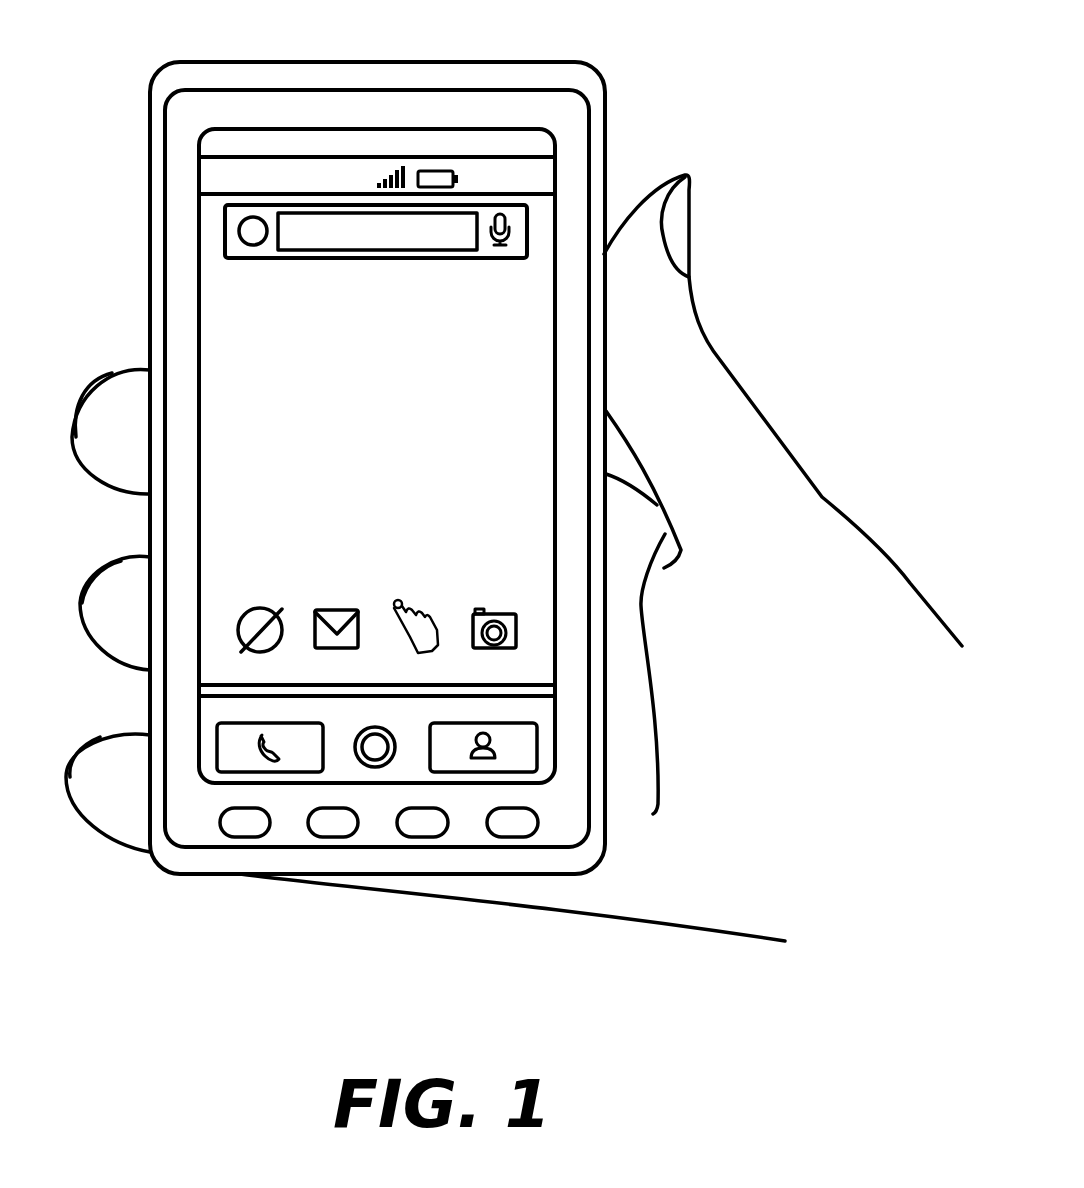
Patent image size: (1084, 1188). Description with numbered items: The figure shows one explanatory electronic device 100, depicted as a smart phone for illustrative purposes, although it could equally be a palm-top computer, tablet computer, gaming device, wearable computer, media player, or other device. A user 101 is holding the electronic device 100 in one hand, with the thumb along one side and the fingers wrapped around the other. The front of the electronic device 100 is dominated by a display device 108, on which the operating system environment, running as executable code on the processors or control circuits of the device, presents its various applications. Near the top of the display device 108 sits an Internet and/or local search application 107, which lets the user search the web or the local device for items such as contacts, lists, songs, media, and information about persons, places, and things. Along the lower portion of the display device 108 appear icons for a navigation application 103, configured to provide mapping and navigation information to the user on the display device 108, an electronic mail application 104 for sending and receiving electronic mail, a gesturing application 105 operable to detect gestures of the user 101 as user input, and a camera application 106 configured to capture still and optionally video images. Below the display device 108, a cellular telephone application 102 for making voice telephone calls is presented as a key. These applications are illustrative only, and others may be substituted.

The electronic device 100 is at (103, 127).
The user 101 is at (762, 523).
The cellular telephone application 102 is at (292, 760).
The navigation application 103 is at (258, 610).
The electronic mail application 104 is at (333, 610).
The gesturing application 105 is at (398, 600).
The camera application 106 is at (487, 609).
The Internet and/or local search application 107 is at (396, 238).
The display device 108 is at (217, 328).